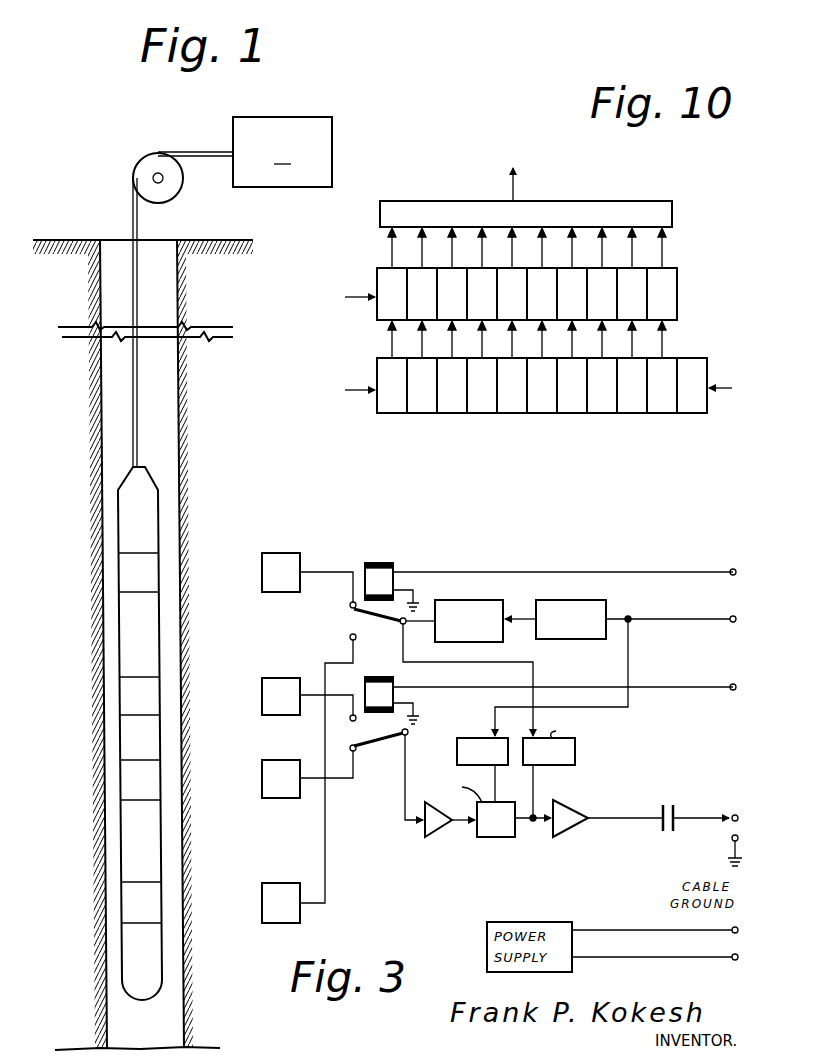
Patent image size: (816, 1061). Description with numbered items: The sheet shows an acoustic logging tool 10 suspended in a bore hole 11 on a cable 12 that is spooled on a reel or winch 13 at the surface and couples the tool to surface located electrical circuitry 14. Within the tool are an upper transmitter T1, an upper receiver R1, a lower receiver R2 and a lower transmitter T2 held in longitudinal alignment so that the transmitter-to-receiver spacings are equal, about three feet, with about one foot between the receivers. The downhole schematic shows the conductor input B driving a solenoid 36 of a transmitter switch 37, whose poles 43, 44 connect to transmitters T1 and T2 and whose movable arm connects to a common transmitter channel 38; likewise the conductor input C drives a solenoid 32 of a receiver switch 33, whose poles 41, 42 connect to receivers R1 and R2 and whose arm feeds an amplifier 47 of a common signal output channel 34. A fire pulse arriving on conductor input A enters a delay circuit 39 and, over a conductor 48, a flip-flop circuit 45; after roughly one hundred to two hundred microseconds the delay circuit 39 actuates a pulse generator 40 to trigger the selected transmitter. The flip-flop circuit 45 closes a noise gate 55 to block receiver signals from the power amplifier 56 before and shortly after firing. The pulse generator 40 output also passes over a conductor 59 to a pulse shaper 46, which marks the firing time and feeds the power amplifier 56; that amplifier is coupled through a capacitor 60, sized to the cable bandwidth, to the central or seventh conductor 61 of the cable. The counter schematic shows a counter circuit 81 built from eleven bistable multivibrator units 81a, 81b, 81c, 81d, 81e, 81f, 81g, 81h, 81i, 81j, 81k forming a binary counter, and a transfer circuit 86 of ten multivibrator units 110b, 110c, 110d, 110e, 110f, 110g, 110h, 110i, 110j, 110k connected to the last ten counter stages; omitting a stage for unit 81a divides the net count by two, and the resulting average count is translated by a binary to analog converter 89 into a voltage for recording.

In FIG. 1, the acoustic logging tool 10 is at (128, 520).
In FIG. 1, the bore hole 11 is at (103, 447).
In FIG. 1, the cable 12 is at (133, 413).
In FIG. 1, the reel or winch 13 is at (131, 171).
In FIG. 1, the surface located electrical circuitry 14 is at (245, 152).
In FIG. 1, the upper transmitter T1 is at (128, 573).
In FIG. 3, the upper transmitter T1 is at (307, 578).
In FIG. 1, the lower transmitter T2 is at (128, 900).
In FIG. 3, the lower transmitter T2 is at (307, 781).
In FIG. 1, the upper receiver R1 is at (128, 693).
In FIG. 3, the upper receiver R1 is at (307, 697).
In FIG. 1, the lower receiver R2 is at (125, 780).
In FIG. 3, the lower receiver R2 is at (307, 774).
In FIG. 3, the solenoid 32 is at (381, 677).
In FIG. 3, the receiver switch 33 is at (377, 772).
In FIG. 3, the common signal output channel 34 is at (531, 840).
In FIG. 3, the solenoid 36 is at (381, 563).
In FIG. 3, the transmitter switch 37 is at (365, 620).
In FIG. 3, the common transmitter channel 38 is at (519, 597).
In FIG. 3, the delay circuit 39 is at (570, 640).
In FIG. 3, the pulse generator 40 is at (468, 600).
In FIG. 3, the pole 41 is at (350, 720).
In FIG. 3, the pole 42 is at (365, 752).
In FIG. 3, the pole 43 is at (350, 601).
In FIG. 3, the pole 44 is at (350, 638).
In FIG. 3, the flip-flop circuit 45 is at (483, 738).
In FIG. 3, the pulse shaper 46 is at (576, 750).
In FIG. 3, the amplifier 47 is at (437, 838).
In FIG. 3, the conductor 48 is at (631, 642).
In FIG. 3, the noise gate 55 is at (490, 838).
In FIG. 3, the power amplifier 56 is at (576, 802).
In FIG. 3, the conductor 59 is at (450, 664).
In FIG. 3, the capacitor 60 is at (667, 833).
In FIG. 3, the central or seventh conductor 61 is at (705, 815).
In FIG. 3, the conductor input A is at (683, 620).
In FIG. 3, the conductor input B is at (745, 573).
In FIG. 3, the conductor input C is at (746, 688).
In FIG. 10, the counter circuit 81 is at (375, 413).
In FIG. 10, the multivibrator unit 81a is at (688, 414).
In FIG. 10, the multivibrator unit 81b is at (662, 414).
In FIG. 10, the multivibrator unit 81c is at (632, 414).
In FIG. 10, the multivibrator unit 81d is at (602, 414).
In FIG. 10, the multivibrator unit 81e is at (572, 414).
In FIG. 10, the multivibrator unit 81f is at (542, 414).
In FIG. 10, the multivibrator unit 81g is at (512, 414).
In FIG. 10, the multivibrator unit 81h is at (482, 414).
In FIG. 10, the multivibrator unit 81i is at (452, 414).
In FIG. 10, the multivibrator unit 81j is at (422, 414).
In FIG. 10, the multivibrator unit 81k is at (392, 414).
In FIG. 10, the transfer circuit 86 is at (375, 318).
In FIG. 10, the multivibrator unit 110b is at (662, 294).
In FIG. 10, the multivibrator unit 110c is at (632, 294).
In FIG. 10, the multivibrator unit 110d is at (602, 294).
In FIG. 10, the multivibrator unit 110e is at (572, 294).
In FIG. 10, the multivibrator unit 110f is at (542, 294).
In FIG. 10, the multivibrator unit 110g is at (512, 294).
In FIG. 10, the multivibrator unit 110h is at (482, 294).
In FIG. 10, the multivibrator unit 110i is at (452, 294).
In FIG. 10, the multivibrator unit 110j is at (422, 294).
In FIG. 10, the multivibrator unit 110k is at (392, 294).
In FIG. 10, the binary to analog converter 89 is at (378, 214).